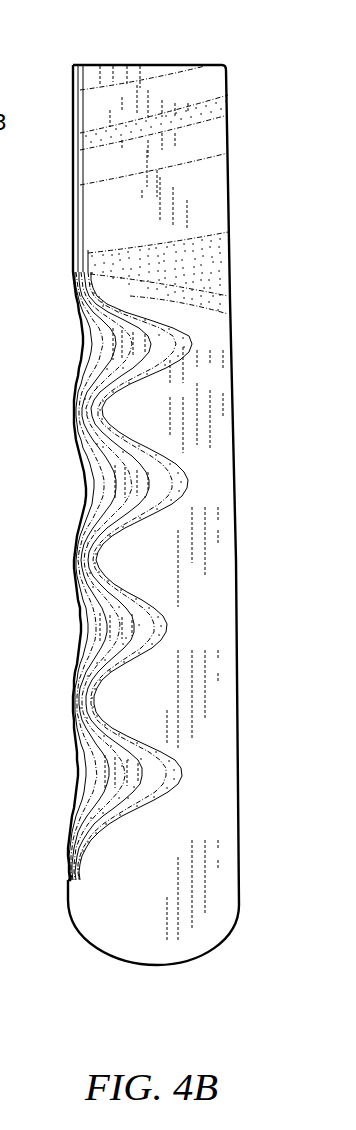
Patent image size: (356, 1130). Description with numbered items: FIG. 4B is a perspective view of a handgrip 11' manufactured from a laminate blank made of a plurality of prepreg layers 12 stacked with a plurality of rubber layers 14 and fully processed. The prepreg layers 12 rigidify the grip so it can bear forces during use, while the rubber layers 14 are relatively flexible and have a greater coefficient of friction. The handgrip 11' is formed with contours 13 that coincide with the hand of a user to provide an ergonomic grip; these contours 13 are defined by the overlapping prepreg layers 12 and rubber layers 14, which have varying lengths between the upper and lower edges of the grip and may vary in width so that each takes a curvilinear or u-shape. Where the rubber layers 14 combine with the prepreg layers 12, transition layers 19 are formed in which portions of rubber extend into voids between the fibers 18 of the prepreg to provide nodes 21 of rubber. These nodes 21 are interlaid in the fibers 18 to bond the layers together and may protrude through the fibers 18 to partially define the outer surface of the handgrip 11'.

The handgrip 11' is at (189, 485).
The prepreg layer 12 is at (217, 407).
The contours 13 is at (72, 341).
The rubber layer 14 is at (208, 195).
The fibers 18 is at (216, 246).
The transition layer 19 is at (217, 268).
The nodes 21 is at (217, 290).